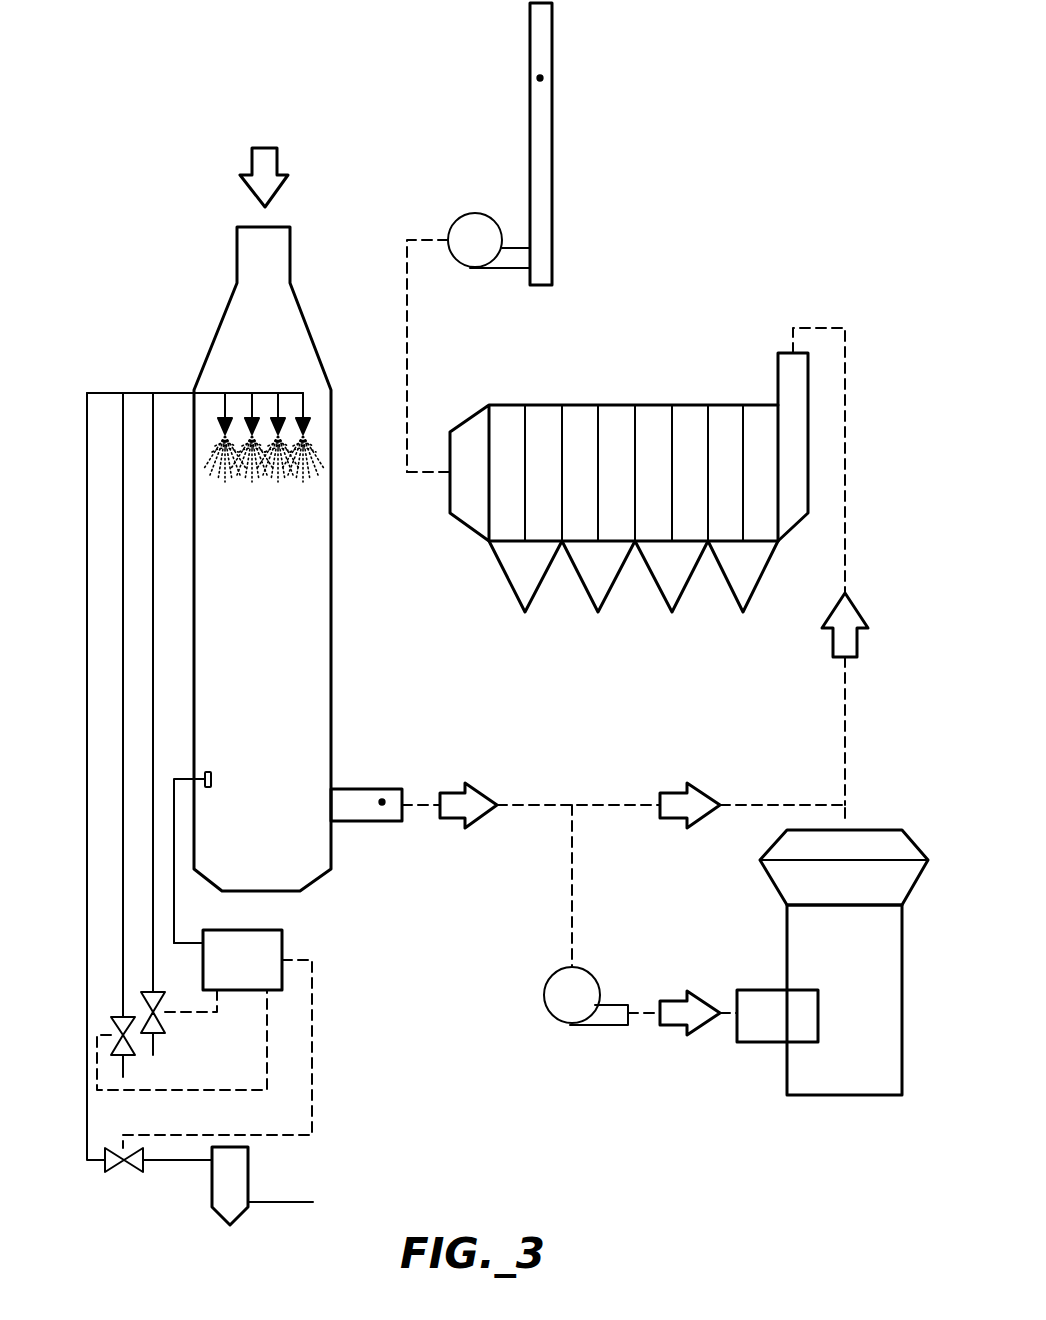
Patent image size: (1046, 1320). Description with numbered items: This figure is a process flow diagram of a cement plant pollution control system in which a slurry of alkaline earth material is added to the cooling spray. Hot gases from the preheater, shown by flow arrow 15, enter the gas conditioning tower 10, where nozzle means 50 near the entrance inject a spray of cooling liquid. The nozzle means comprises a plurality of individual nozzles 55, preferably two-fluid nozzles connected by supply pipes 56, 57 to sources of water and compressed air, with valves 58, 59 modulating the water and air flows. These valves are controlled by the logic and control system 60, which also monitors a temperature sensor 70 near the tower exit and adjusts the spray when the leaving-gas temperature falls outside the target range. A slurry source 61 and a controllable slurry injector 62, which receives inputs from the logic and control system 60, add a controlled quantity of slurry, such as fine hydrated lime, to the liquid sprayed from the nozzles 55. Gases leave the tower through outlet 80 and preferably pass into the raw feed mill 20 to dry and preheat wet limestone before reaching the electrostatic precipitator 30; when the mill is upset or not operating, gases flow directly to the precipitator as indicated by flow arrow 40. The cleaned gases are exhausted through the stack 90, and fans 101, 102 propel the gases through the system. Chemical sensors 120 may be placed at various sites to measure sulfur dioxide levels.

The gas conditioning tower 10 is at (277, 603).
The flow arrow 15 is at (278, 162).
The raw feed mill 20 is at (858, 967).
The electrostatic precipitator 30 is at (548, 405).
The flow arrow 40 is at (677, 783).
The nozzle means 50 is at (265, 393).
The individual nozzles 55 is at (313, 420).
The supply pipe 56 is at (123, 809).
The supply pipe 57 is at (153, 594).
The valve 58 is at (113, 1027).
The valve 59 is at (163, 1020).
The logic and control system 60 is at (257, 970).
The slurry source 61 is at (243, 1182).
The controllable slurry injector 62 is at (135, 1172).
The temperature sensor 70 is at (211, 779).
The outlet 80 is at (371, 821).
The stack 90 is at (555, 163).
The fan 101 is at (473, 213).
The fan 102 is at (570, 1028).
The chemical sensors 120 is at (382, 802).